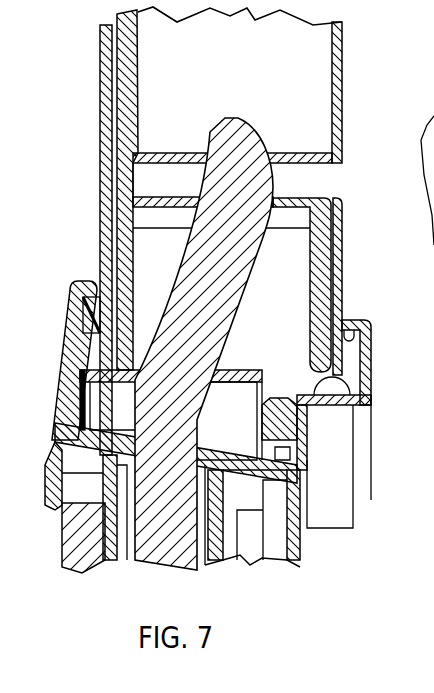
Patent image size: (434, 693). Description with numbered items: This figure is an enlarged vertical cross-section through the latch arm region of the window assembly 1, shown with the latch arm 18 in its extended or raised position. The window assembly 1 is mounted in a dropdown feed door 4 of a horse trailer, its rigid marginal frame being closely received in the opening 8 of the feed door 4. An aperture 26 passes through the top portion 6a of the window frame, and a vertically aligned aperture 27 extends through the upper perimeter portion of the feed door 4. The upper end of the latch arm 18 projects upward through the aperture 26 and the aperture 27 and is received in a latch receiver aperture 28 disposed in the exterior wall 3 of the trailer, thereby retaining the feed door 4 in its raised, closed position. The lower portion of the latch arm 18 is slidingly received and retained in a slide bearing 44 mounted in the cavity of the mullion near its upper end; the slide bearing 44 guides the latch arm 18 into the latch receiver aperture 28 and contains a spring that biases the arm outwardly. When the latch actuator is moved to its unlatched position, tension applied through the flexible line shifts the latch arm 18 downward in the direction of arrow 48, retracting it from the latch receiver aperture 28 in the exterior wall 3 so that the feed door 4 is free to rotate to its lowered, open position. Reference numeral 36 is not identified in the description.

The window assembly 1 is at (47, 457).
The exterior wall 3 is at (343, 63).
The dropdown feed door 4 is at (356, 226).
The top portion of frame 6a is at (252, 370).
The opening 8 is at (145, 168).
The latch arm 18 is at (247, 123).
The aperture 26 is at (223, 370).
The aperture 27 is at (282, 202).
The latch receiver aperture 28 is at (270, 160).
The bearing 36 is at (60, 547).
The slide bearing 44 is at (203, 553).
The arrow 48 is at (270, 240).